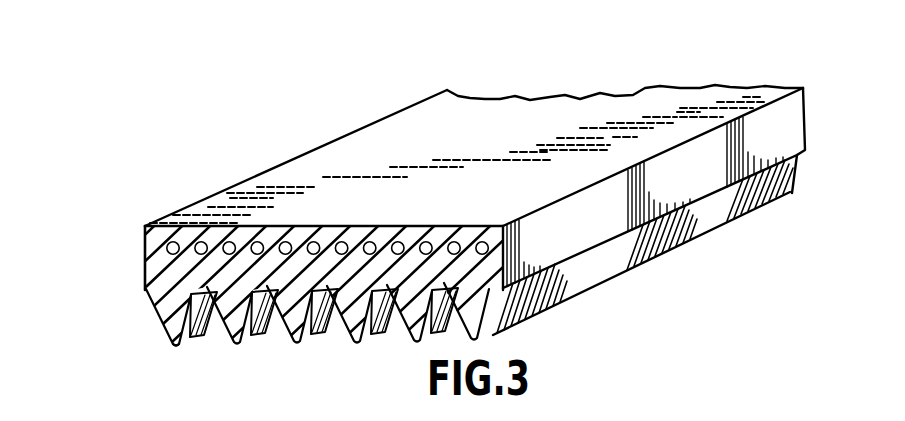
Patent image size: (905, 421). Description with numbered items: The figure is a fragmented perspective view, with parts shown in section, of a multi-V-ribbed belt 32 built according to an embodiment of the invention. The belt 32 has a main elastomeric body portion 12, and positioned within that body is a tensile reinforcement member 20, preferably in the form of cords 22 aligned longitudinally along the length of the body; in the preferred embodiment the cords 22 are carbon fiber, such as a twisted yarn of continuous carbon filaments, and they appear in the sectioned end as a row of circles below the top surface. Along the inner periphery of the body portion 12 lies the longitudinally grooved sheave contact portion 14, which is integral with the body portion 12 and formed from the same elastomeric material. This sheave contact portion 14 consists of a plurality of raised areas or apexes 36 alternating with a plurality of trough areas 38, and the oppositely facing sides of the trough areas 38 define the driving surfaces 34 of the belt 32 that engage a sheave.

The main elastomeric body portion 12 is at (409, 215).
The sheave contact portion 14 is at (570, 299).
The tensile reinforcement member 20 is at (143, 262).
The cords 22 is at (316, 241).
The multi-V-ribbed belt 32 is at (250, 160).
The driving surfaces 34 is at (333, 320).
The raised areas or apexes 36 is at (176, 333).
The trough areas 38 is at (260, 337).